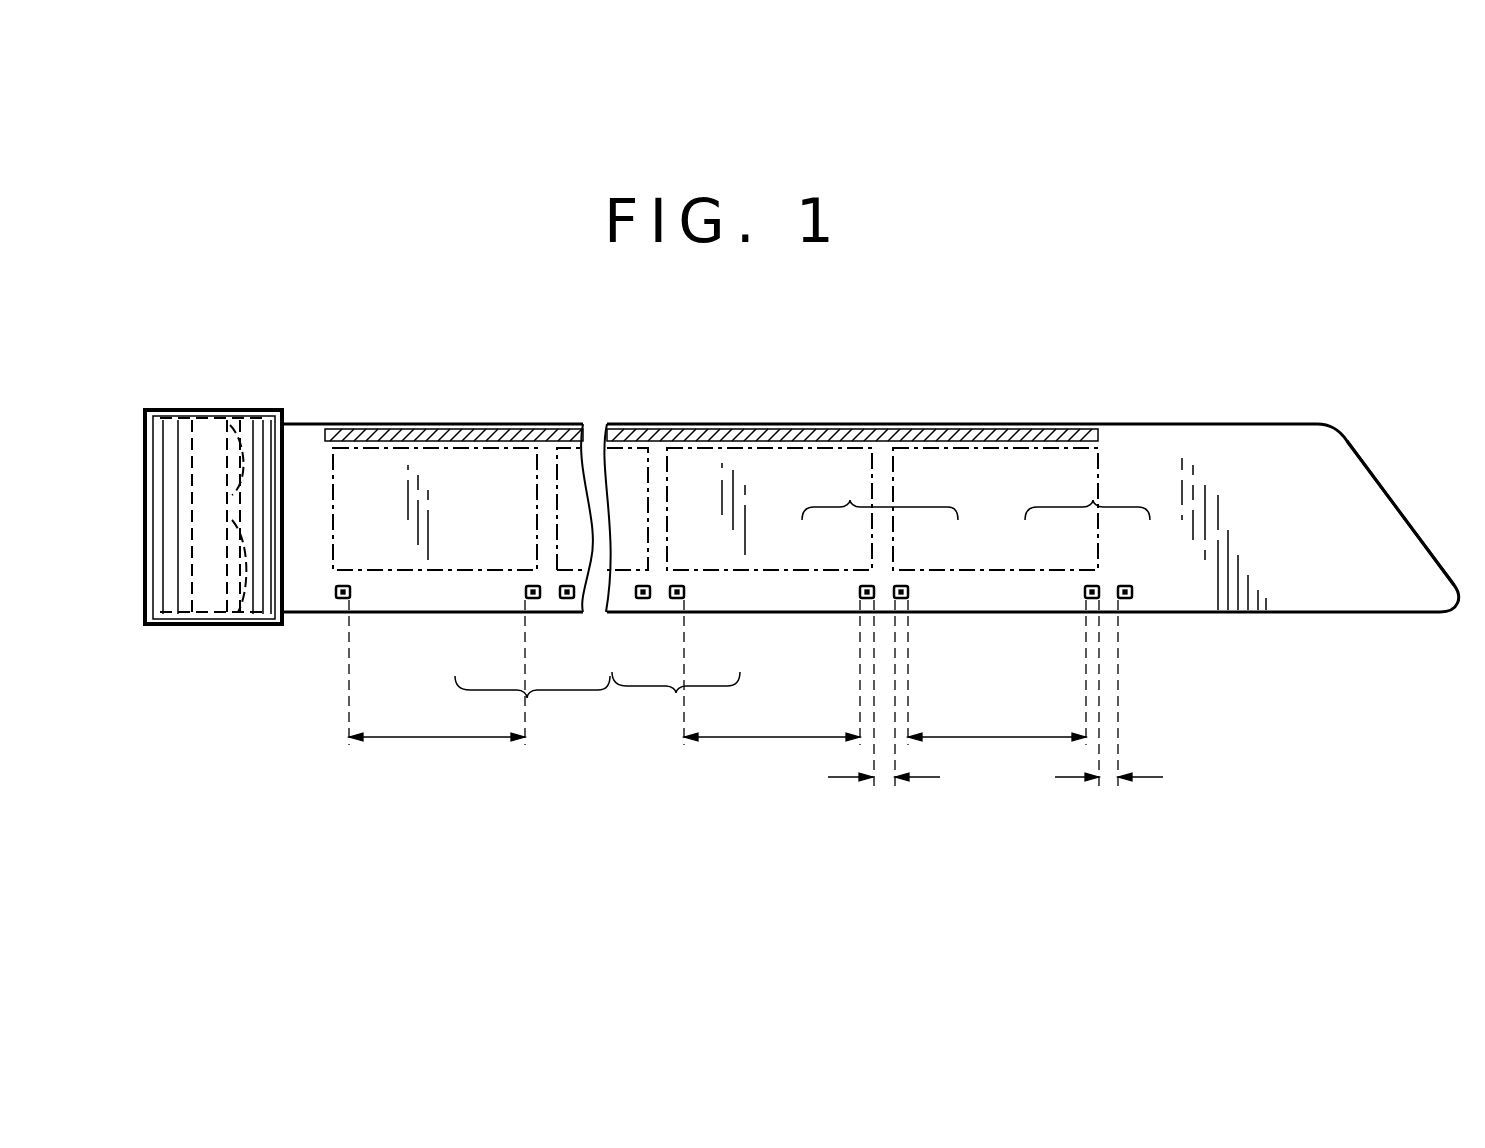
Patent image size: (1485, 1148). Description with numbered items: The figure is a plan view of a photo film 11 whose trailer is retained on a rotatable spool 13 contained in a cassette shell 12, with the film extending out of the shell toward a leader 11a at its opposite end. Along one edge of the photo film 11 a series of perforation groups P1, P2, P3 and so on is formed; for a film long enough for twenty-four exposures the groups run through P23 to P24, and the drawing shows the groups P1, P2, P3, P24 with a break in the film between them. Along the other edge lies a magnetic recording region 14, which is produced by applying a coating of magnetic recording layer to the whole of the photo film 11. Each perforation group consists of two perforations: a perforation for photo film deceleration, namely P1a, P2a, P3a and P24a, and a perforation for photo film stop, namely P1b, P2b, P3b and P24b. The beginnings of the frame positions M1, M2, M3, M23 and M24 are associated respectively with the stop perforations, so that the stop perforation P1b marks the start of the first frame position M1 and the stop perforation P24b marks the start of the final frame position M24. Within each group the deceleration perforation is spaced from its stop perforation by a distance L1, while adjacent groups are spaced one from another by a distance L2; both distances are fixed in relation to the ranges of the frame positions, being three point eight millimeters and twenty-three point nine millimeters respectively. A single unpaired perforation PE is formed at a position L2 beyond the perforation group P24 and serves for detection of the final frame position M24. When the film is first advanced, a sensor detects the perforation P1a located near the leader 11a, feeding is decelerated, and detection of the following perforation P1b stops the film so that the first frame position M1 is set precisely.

The photo film 11 is at (1220, 424).
The leader 11a is at (1375, 488).
The cassette shell 12 is at (213, 628).
The spool 13 is at (209, 447).
The magnetic recording region 14 is at (888, 435).
The first frame position M1 is at (1020, 447).
The frame position M2 is at (790, 447).
The frame position M3 is at (645, 447).
The frame position M23 is at (572, 446).
The final frame position M24 is at (430, 446).
The perforation group P1 is at (1087, 497).
The perforation for photo film deceleration P1a is at (1125, 586).
The perforation for photo film stop P1b is at (1092, 586).
The perforation group P2 is at (880, 497).
The perforation for photo film deceleration P2a is at (902, 586).
The perforation for photo film stop P2b is at (867, 586).
The perforation group P3 is at (676, 700).
The perforation for photo film deceleration P3a is at (680, 598).
The perforation for photo film stop P3b is at (643, 598).
The perforation group P24 is at (532, 702).
The perforation for photo film deceleration P24a is at (567, 598).
The perforation for photo film stop P24b is at (527, 598).
The perforation PE is at (340, 600).
The distance L1 is at (995, 795).
The distance L2 is at (717, 757).